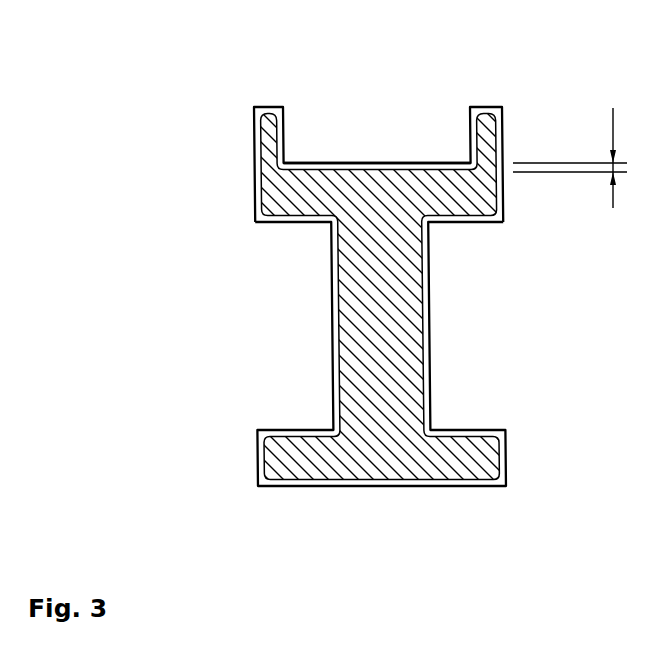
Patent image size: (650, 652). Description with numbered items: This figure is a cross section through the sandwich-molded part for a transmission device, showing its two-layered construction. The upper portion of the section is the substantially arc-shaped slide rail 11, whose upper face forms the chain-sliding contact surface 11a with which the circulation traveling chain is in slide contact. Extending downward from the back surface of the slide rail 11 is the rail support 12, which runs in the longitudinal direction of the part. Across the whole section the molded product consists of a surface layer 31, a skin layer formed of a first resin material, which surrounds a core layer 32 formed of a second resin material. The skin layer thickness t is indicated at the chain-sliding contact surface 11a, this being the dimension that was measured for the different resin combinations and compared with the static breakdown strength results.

The slide rail 11 is at (235, 108).
The rail support 12 is at (238, 225).
The chain-sliding contact surface 11a is at (364, 157).
The surface layer 31 is at (415, 168).
The core layer 32 is at (405, 323).
The skin layer thickness t is at (570, 158).